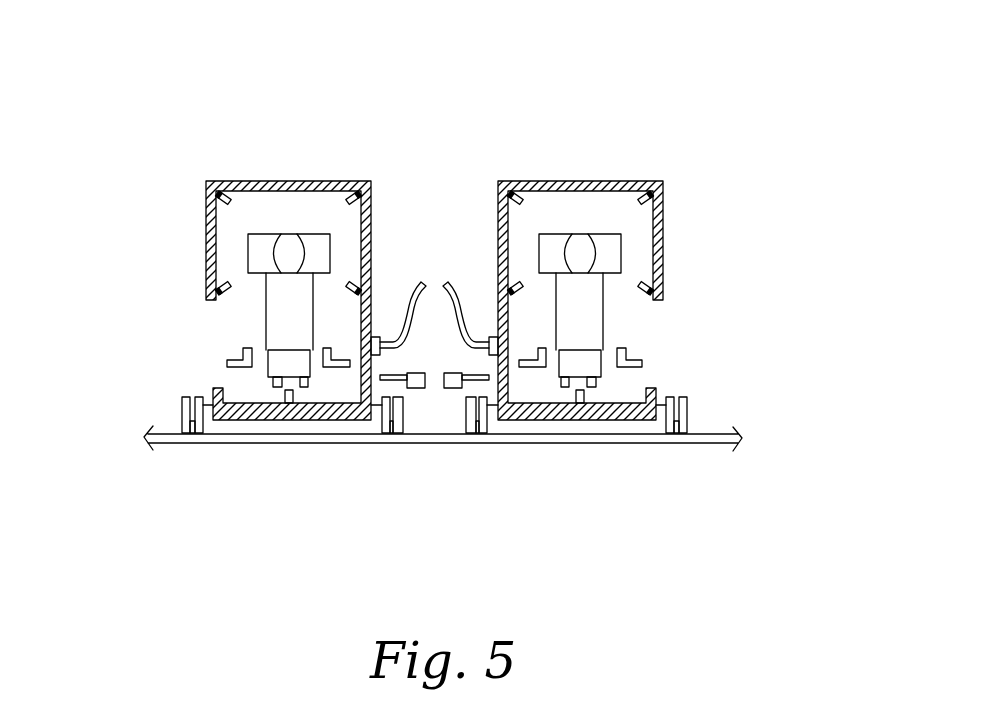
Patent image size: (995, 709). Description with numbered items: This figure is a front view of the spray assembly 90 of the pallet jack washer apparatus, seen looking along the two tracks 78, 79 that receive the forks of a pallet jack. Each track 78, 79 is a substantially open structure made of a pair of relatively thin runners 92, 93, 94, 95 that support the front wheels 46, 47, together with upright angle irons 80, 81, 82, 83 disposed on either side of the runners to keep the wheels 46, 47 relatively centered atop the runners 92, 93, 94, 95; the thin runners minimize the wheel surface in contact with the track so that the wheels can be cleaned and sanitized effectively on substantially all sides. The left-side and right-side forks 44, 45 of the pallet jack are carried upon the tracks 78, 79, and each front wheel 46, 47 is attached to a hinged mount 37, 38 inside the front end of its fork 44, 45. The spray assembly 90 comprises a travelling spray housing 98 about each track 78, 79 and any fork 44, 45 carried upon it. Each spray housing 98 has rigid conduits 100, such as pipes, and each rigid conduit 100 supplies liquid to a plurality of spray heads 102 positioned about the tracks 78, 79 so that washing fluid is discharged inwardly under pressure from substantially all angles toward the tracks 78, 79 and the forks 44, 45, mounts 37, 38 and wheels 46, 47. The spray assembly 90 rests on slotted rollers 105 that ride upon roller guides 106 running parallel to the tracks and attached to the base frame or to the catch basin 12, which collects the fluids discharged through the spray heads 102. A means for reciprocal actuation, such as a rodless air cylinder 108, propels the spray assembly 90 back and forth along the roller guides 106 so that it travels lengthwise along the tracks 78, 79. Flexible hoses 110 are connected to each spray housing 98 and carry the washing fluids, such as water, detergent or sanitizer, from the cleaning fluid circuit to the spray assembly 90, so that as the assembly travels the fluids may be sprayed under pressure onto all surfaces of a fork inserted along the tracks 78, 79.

The catch basin 12 is at (735, 438).
The hinged mount 37 is at (604, 303).
The hinged mount 38 is at (265, 318).
The left-side fork 44 is at (612, 235).
The right-side fork 45 is at (248, 238).
The front wheel 46 is at (592, 348).
The front wheel 47 is at (268, 372).
The track 78 is at (536, 366).
The track 79 is at (273, 387).
The angle iron 80 is at (582, 400).
The angle iron 81 is at (373, 300).
The angle iron 82 is at (643, 363).
The angle iron 83 is at (225, 362).
The spray assembly 90 is at (505, 98).
The runner 92 is at (600, 378).
The runner 93 is at (567, 388).
The runner 94 is at (292, 400).
The runner 95 is at (269, 378).
The travelling spray housing 98 is at (327, 121).
The rigid conduit 100 is at (272, 181).
The spray head 102 is at (248, 181).
The slotted roller 105 is at (182, 410).
The roller guide 106 is at (190, 432).
The rodless air cylinder 108 is at (460, 373).
The flexible hose 110 is at (420, 284).